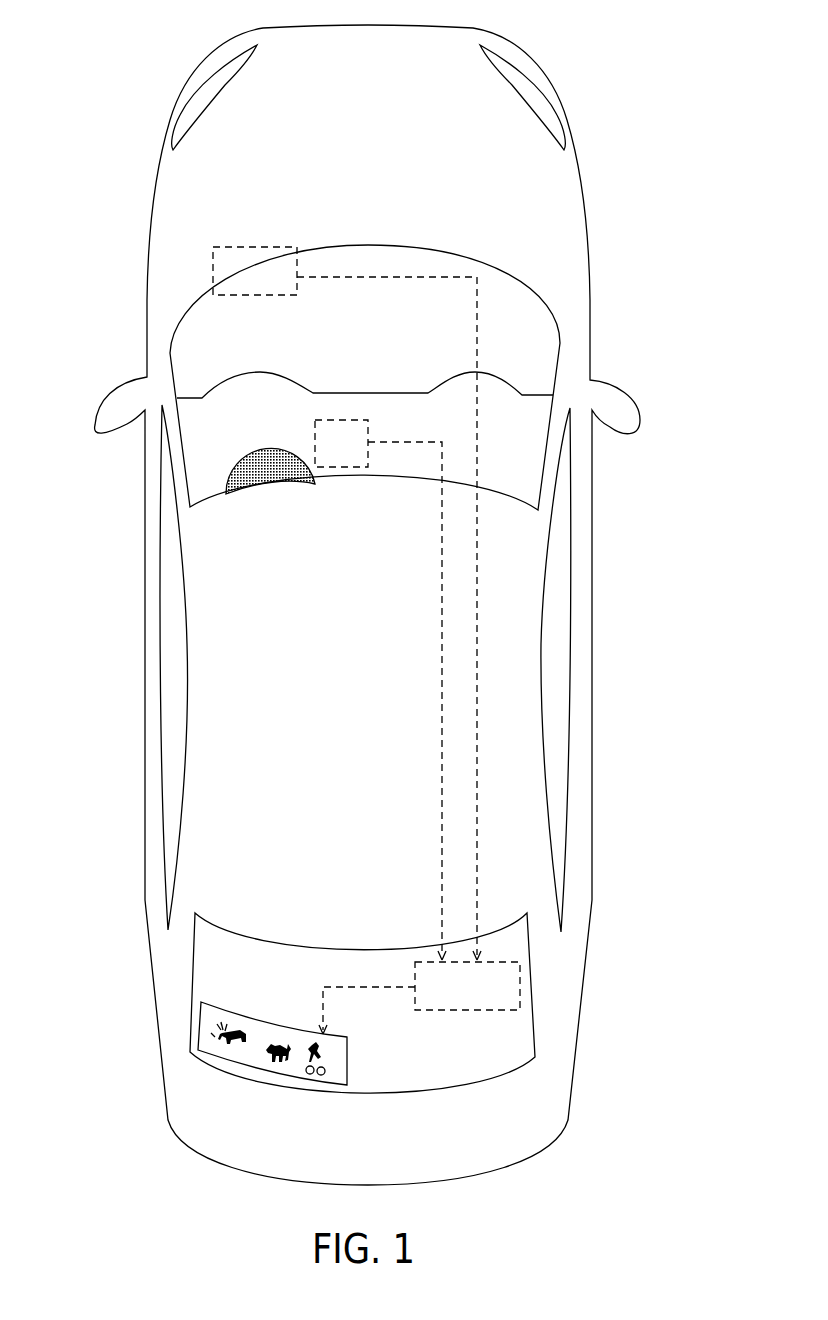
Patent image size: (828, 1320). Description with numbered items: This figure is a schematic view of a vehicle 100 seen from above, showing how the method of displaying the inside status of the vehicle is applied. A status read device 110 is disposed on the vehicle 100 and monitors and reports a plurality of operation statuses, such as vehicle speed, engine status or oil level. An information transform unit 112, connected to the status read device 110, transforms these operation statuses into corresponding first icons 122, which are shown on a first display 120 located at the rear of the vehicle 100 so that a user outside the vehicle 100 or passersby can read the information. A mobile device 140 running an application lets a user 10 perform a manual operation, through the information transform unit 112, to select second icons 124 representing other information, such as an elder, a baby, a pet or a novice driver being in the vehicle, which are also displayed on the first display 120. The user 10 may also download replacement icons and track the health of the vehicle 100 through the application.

The vehicle 100 is at (570, 205).
The status read device 110 is at (213, 263).
The information transform unit 112 is at (520, 985).
The first display 120 is at (347, 1058).
The first icons 122 is at (222, 1030).
The second icons 124 is at (267, 1052).
The mobile device 140 is at (347, 420).
The user 10 is at (227, 470).